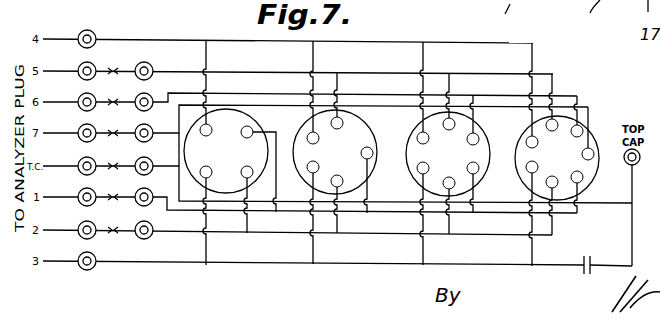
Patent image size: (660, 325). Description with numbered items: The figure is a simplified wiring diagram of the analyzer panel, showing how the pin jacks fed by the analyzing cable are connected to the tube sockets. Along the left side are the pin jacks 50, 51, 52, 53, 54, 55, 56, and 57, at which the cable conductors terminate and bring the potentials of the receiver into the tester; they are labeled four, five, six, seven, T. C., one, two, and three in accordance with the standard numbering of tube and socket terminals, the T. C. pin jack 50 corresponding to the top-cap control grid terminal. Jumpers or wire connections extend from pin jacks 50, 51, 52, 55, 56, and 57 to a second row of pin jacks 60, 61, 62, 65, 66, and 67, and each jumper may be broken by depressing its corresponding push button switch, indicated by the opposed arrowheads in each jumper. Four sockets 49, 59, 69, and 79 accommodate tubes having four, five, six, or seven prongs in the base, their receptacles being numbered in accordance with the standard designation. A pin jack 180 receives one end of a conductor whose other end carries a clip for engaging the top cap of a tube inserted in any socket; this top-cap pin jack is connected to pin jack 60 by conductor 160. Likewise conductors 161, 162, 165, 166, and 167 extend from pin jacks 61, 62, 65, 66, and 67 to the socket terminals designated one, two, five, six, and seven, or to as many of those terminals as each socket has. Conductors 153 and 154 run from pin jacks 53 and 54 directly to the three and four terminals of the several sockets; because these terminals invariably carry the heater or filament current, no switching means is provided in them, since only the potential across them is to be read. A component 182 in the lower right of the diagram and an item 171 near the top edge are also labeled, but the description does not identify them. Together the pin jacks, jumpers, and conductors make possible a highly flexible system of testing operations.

The socket 49 is at (233, 193).
The socket 59 is at (357, 192).
The socket 69 is at (485, 148).
The socket 79 is at (598, 140).
The T. C. pin jack 50 is at (81, 161).
The pin jack 51 is at (81, 192).
The pin jack 52 is at (80, 226).
The pin jack 53 is at (86, 270).
The pin jack 54 is at (94, 33).
The pin jack 55 is at (93, 65).
The pin jack 56 is at (94, 97).
The pin jack 57 is at (81, 127).
The pin jack 60 is at (151, 161).
The pin jack 61 is at (156, 193).
The pin jack 62 is at (151, 237).
The pin jack 65 is at (151, 66).
The pin jack 66 is at (151, 96).
The pin jack 67 is at (151, 128).
The conductor 153 is at (279, 264).
The conductor 154 is at (405, 43).
The conductor 160 is at (389, 201).
The conductor 161 is at (397, 214).
The conductor 162 is at (287, 234).
The conductor 165 is at (485, 73).
The conductor 166 is at (573, 97).
The conductor 167 is at (383, 107).
The capacitor 182 is at (592, 256).
The pin jack 180 is at (523, 14).
The lead 171 is at (619, 16).